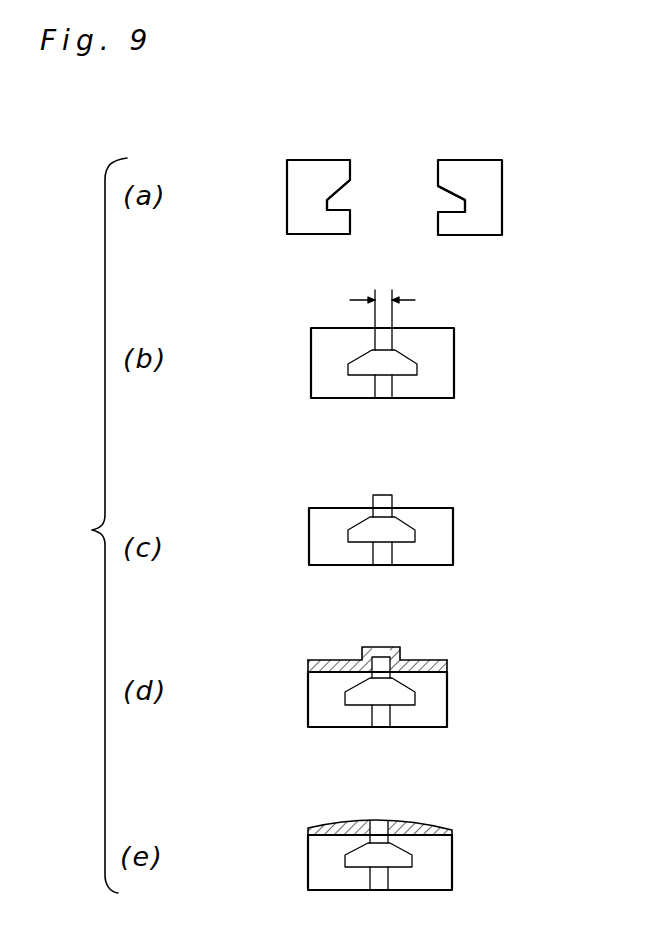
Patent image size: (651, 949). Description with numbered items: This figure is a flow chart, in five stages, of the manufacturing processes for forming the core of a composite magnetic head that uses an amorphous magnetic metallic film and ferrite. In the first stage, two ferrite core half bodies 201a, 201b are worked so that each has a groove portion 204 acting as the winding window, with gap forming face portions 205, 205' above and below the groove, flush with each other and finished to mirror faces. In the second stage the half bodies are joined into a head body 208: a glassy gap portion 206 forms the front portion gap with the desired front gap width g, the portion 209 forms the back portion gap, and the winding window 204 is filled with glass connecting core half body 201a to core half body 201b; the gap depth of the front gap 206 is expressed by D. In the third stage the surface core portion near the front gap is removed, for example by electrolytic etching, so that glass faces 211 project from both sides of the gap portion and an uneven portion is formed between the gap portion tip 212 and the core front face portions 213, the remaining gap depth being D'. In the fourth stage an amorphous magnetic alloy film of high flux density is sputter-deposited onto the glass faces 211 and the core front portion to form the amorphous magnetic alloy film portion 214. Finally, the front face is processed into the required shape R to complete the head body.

The core half body 201a is at (302, 224).
The core half body 201b is at (488, 225).
The groove portion 204 is at (463, 197).
The gap forming face portion 205 is at (394, 129).
The gap forming face portion 205' is at (394, 238).
The glassy gap portion 206 is at (387, 340).
The head body 208 is at (378, 388).
The back portion gap 209 is at (387, 388).
The glass face 211 is at (373, 500).
The gap portion tip 212 is at (385, 495).
The core front face portion 213 is at (328, 507).
The amorphous magnetic alloy film portion 214 is at (400, 650).
The gap depth D is at (337, 317).
The gap depth D' is at (473, 510).
The front gap width g is at (384, 290).
The required shape R is at (424, 814).